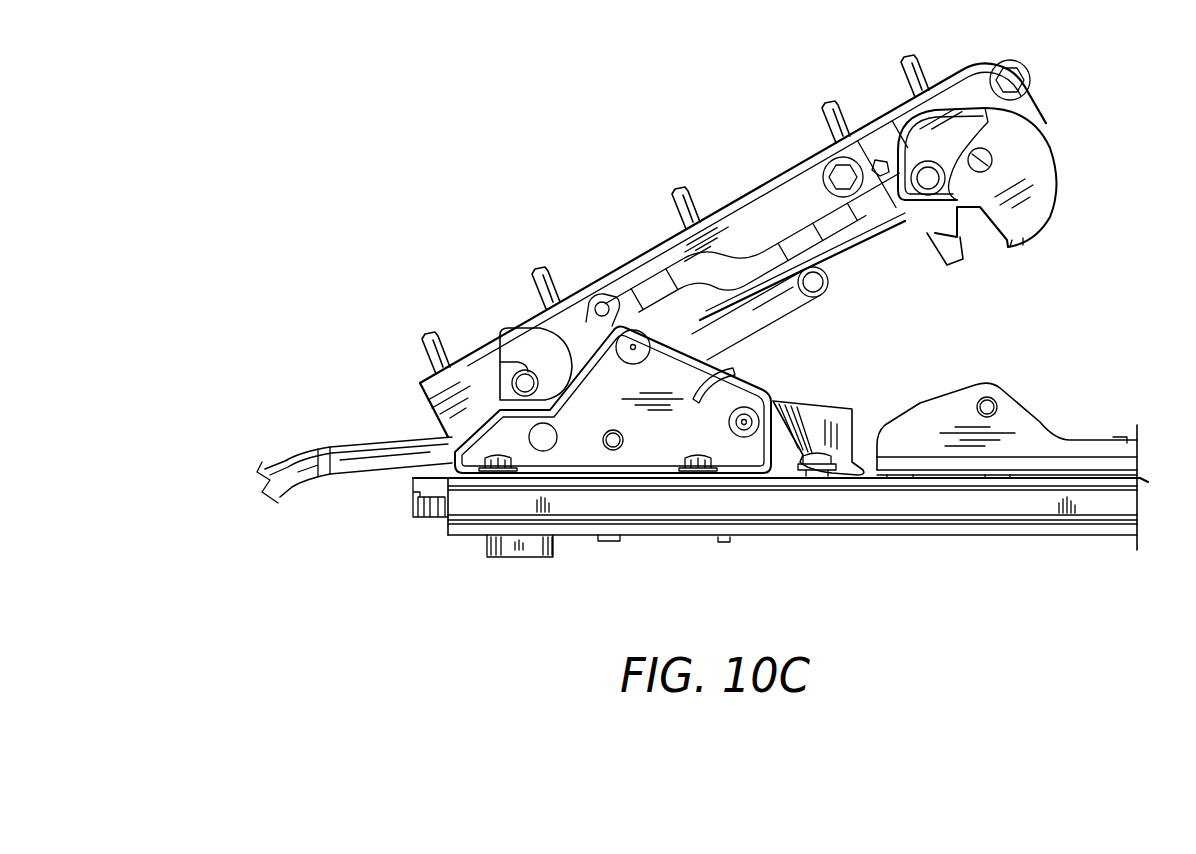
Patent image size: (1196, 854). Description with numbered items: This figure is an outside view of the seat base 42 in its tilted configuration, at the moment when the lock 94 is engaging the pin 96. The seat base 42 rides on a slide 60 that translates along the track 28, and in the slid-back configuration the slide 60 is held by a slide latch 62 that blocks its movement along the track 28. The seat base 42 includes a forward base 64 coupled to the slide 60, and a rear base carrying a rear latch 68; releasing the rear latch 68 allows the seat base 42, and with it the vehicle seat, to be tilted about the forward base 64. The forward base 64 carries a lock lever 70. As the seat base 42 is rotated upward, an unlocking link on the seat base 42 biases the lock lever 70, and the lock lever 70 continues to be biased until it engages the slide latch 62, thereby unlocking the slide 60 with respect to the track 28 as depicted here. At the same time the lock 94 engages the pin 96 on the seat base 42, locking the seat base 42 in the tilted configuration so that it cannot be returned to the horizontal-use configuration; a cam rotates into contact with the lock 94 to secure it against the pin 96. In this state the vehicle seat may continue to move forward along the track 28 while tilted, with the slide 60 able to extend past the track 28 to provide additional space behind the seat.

The track 28 is at (982, 507).
The seat base 42 is at (737, 213).
The slide 60 is at (413, 503).
The slide latch 62 is at (818, 473).
The forward base 64 is at (497, 441).
The rear latch 68 is at (1043, 192).
The lock lever 70 is at (803, 425).
The lock 94 is at (527, 352).
The pin 96 is at (518, 384).